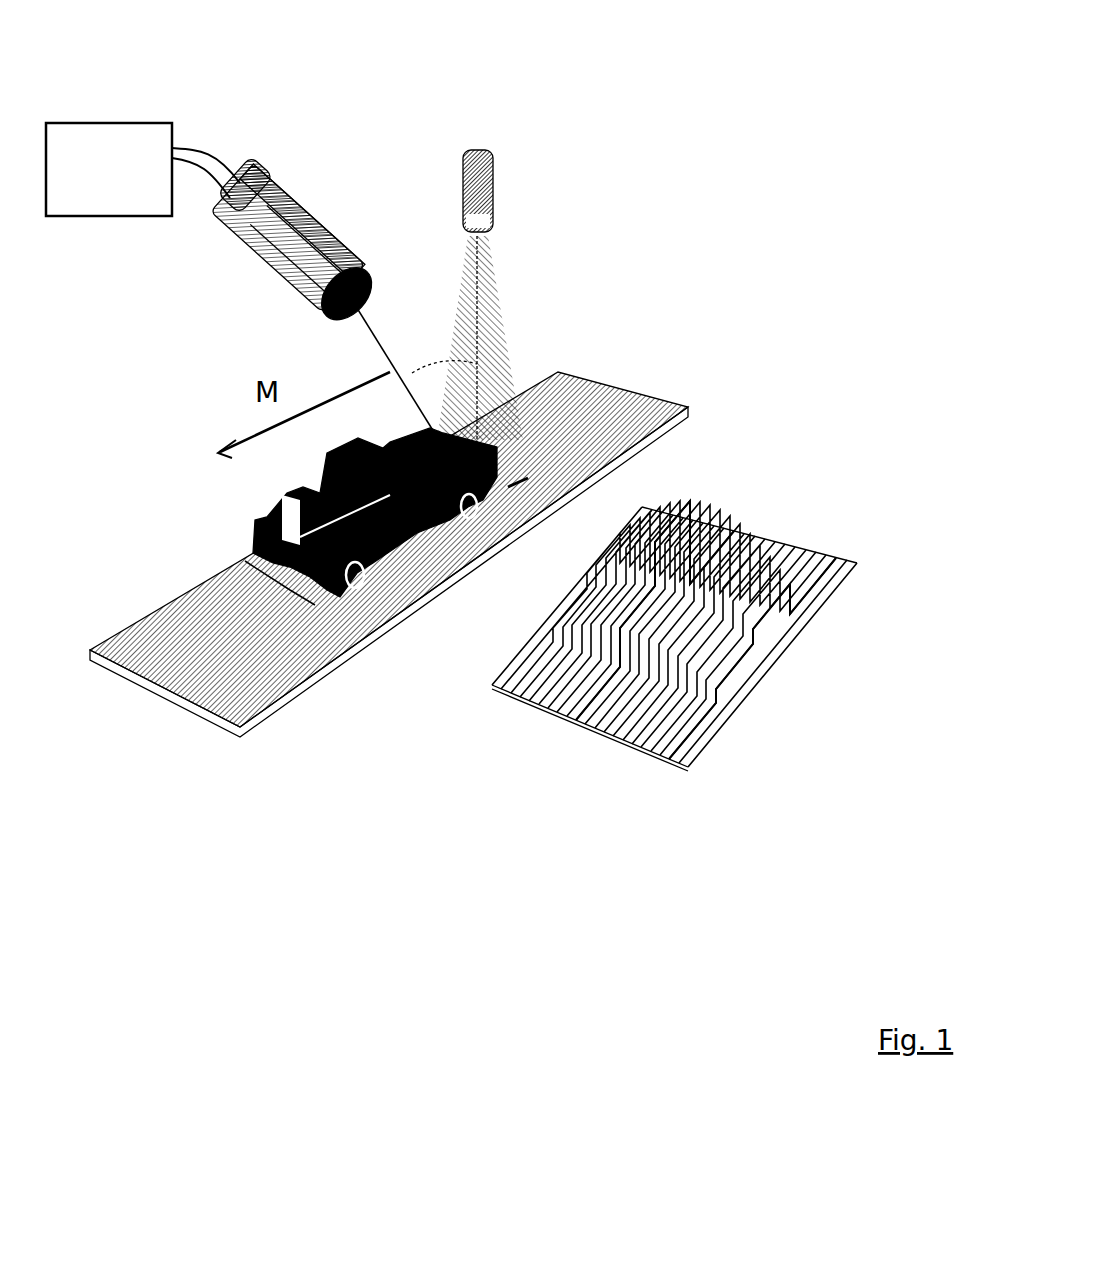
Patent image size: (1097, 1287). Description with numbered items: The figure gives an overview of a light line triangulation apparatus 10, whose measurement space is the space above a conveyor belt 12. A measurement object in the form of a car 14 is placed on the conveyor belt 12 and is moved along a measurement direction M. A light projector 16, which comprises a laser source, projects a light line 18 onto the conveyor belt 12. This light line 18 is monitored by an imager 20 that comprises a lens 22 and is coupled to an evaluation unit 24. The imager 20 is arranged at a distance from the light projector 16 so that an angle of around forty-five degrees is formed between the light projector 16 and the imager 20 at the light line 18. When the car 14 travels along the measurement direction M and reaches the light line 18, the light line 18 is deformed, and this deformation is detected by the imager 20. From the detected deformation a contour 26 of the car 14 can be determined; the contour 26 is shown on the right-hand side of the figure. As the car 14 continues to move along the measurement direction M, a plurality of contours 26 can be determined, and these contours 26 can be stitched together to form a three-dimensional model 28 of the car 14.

The light line triangulation apparatus 10 is at (662, 158).
The conveyor belt 12 is at (640, 408).
The car 14 is at (320, 590).
The light projector 16 is at (497, 175).
The light line 18 is at (512, 484).
The imager 20 is at (322, 198).
The lens 22 is at (372, 262).
The evaluation unit 24 is at (143, 169).
The contour 26 is at (795, 560).
The 3D-model 28 is at (800, 480).